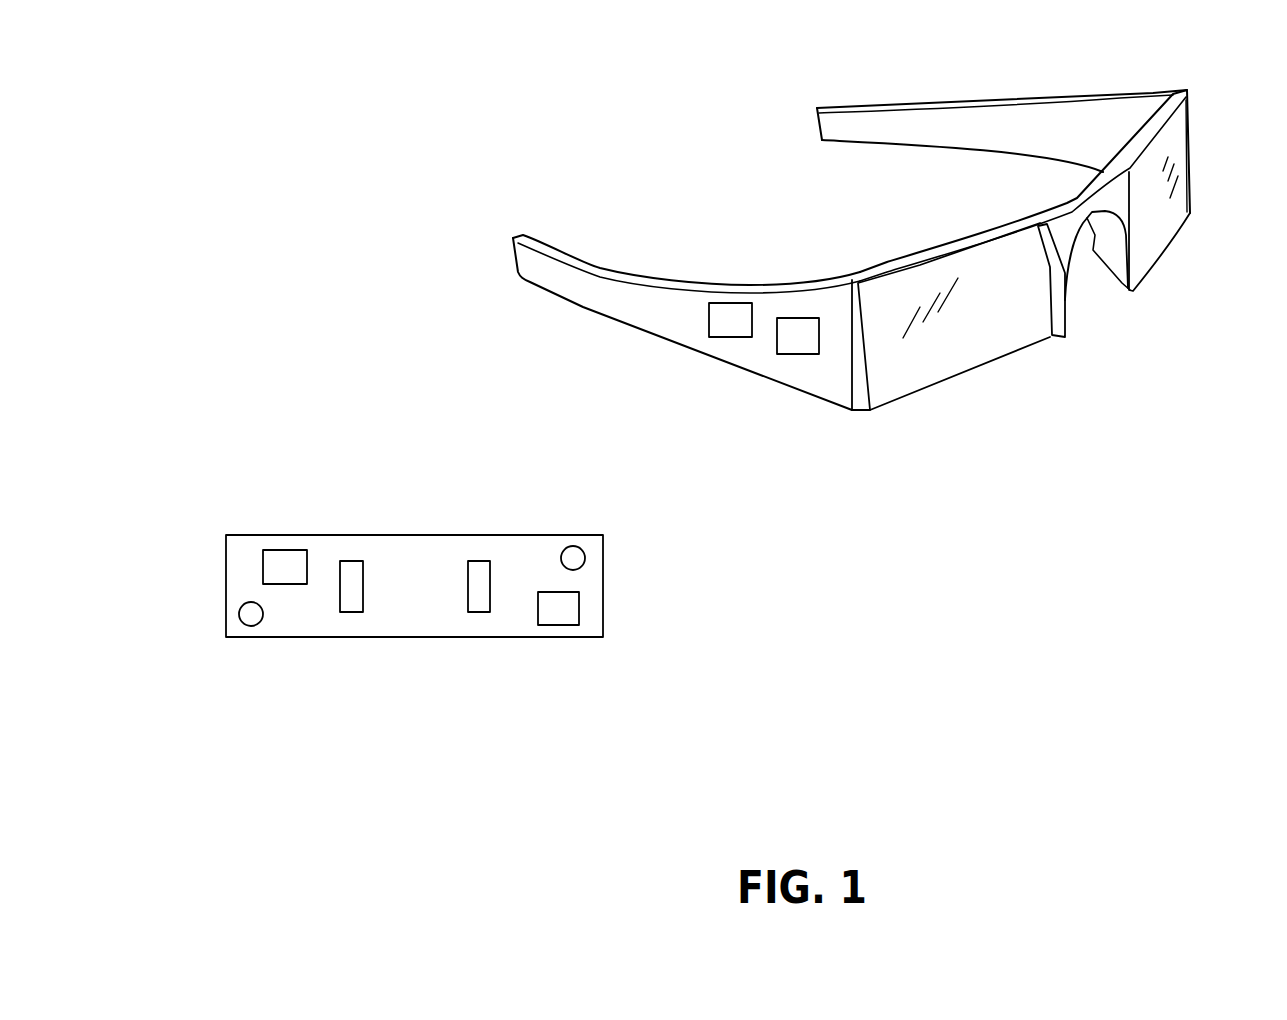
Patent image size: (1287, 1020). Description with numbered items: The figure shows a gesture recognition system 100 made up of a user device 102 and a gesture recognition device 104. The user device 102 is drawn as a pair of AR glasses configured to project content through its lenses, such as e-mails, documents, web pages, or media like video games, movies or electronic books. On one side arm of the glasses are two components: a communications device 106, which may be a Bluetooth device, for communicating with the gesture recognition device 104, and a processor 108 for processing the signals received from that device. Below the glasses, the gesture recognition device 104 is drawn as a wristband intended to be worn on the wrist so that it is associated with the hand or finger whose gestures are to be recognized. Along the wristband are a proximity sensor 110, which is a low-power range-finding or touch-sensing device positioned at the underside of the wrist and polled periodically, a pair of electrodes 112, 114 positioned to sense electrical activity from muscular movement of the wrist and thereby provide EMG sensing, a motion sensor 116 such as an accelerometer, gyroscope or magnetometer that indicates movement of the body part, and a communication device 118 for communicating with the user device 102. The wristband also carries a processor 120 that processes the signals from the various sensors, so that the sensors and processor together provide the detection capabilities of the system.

The gesture recognition system 100 is at (183, 95).
The user device 102 is at (671, 104).
The gesture recognition device 104 is at (623, 276).
The communications device 106 is at (800, 318).
The processor 108 is at (730, 302).
The proximity sensor 110 is at (250, 627).
The electrode 112 is at (357, 561).
The electrode 114 is at (483, 560).
The motion sensor 116 is at (577, 546).
The communication device 118 is at (288, 548).
The processor 120 is at (558, 627).